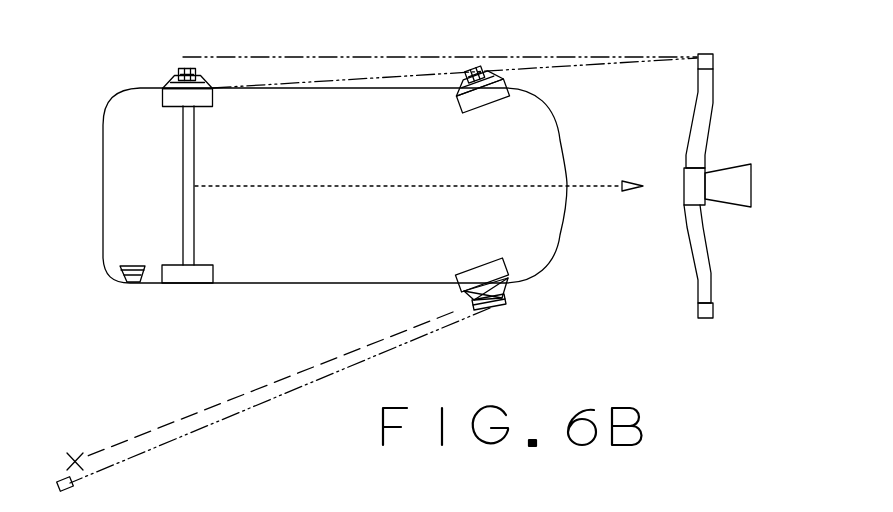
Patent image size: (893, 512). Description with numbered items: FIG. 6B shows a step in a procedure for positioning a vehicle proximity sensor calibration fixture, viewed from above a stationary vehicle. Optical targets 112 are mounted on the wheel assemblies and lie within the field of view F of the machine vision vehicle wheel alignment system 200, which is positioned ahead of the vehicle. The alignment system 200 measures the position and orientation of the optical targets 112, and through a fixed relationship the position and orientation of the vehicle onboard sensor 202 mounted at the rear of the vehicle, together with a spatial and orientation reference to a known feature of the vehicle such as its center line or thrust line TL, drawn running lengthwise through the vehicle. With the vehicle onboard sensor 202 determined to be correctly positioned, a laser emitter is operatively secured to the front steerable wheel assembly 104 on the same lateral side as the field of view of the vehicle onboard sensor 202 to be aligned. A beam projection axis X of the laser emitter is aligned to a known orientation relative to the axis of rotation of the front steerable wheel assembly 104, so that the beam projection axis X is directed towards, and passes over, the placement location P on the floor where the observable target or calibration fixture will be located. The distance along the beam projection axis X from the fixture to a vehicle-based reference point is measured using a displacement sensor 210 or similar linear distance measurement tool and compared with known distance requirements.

The optical target 112 is at (191, 76).
The front steerable wheel assembly 104 is at (478, 276).
The vehicle onboard sensor 202 is at (130, 264).
The machine vision vehicle wheel alignment system 200 is at (752, 186).
The displacement sensor 210 is at (67, 489).
The field of view F is at (597, 57).
The thrust line TL is at (334, 185).
The beam projection axis X is at (287, 378).
The placement location P is at (66, 463).